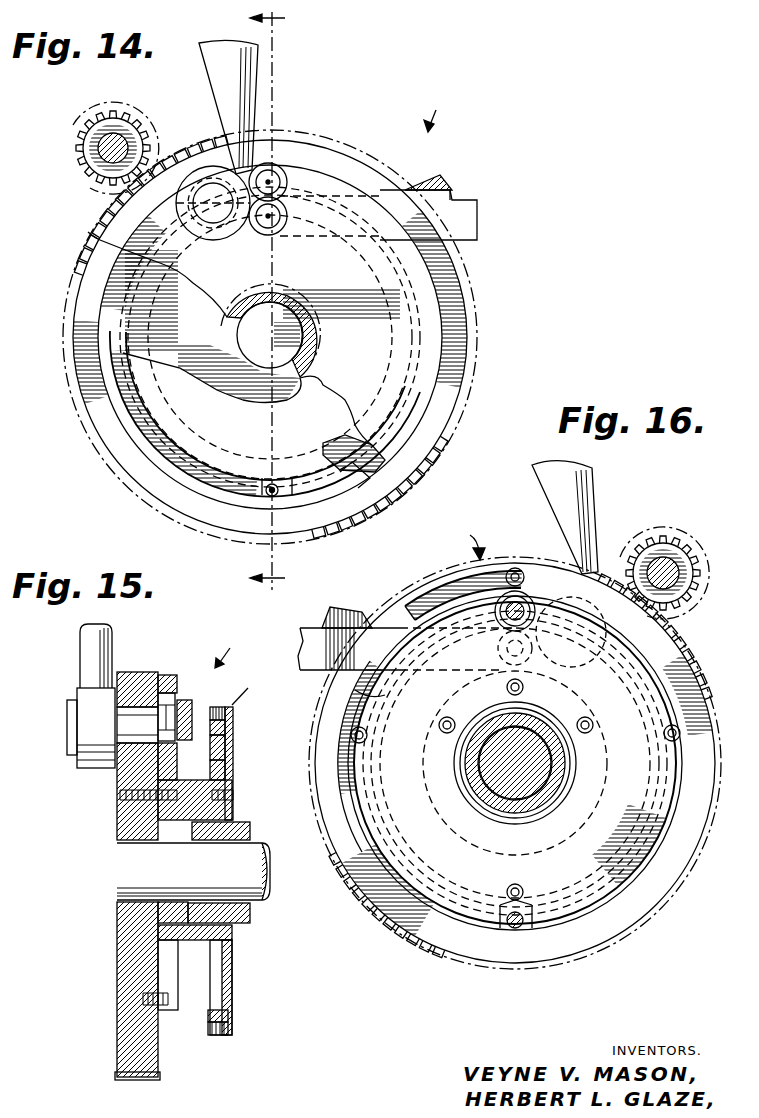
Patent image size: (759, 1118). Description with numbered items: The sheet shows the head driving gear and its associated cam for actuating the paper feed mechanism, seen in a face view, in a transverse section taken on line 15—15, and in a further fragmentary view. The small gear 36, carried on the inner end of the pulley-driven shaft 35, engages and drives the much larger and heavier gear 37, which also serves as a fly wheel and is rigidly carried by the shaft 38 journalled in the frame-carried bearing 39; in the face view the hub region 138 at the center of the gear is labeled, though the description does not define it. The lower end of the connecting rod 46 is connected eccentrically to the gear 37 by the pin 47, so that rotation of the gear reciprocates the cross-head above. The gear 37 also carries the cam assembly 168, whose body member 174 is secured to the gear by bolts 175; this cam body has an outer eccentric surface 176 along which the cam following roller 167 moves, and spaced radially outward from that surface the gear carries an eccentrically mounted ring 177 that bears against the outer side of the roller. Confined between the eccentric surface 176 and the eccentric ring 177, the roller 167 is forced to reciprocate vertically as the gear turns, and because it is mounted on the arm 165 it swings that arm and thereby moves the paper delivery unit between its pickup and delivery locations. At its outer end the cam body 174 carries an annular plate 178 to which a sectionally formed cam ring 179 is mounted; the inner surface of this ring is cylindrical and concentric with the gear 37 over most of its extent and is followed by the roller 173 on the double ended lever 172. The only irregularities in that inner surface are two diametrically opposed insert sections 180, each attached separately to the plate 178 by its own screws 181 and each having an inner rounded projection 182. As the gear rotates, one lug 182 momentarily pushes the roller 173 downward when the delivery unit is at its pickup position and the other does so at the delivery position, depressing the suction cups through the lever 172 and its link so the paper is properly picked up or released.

In FIG. 14, the section line 15— 15 is at (279, 303).
In FIG. 14, the shaft 35 is at (100, 150).
In FIG. 16, the shaft 35 is at (690, 568).
In FIG. 14, the small gear 36 is at (85, 120).
In FIG. 16, the small gear 36 is at (690, 530).
In FIG. 14, the gear 37 is at (103, 218).
In FIG. 15, the gear 37 is at (120, 972).
In FIG. 16, the gear 37 is at (680, 640).
In FIG. 15, the shaft 38 is at (262, 885).
In FIG. 16, the shaft 38 is at (478, 808).
In FIG. 15, the bearing 39 is at (236, 822).
In FIG. 16, the bearing 39 is at (528, 825).
In FIG. 14, the connecting rod 46 is at (252, 80).
In FIG. 15, the connecting rod 46 is at (85, 645).
In FIG. 16, the connecting rod 46 is at (592, 492).
In FIG. 14, the pin 47 is at (240, 168).
In FIG. 15, the pin 47 is at (68, 718).
In FIG. 16, the pin 47 is at (590, 690).
In FIG. 14, the hub 138 is at (298, 336).
In FIG. 14, the arm 165 is at (432, 178).
In FIG. 15, the arm 165 is at (200, 705).
In FIG. 16, the arm 165 is at (368, 610).
In FIG. 14, the cam following roller 167 is at (290, 165).
In FIG. 15, the cam following roller 167 is at (170, 698).
In FIG. 16, the cam following roller 167 is at (513, 566).
In FIG. 14, the cam assembly 168 is at (444, 113).
In FIG. 15, the cam assembly 168 is at (230, 649).
In FIG. 16, the cam assembly 168 is at (465, 542).
In FIG. 14, the double ended lever 172 is at (470, 206).
In FIG. 15, the double ended lever 172 is at (235, 781).
In FIG. 16, the double ended lever 172 is at (318, 672).
In FIG. 14, the roller 173 is at (290, 235).
In FIG. 15, the roller 173 is at (228, 745).
In FIG. 16, the roller 173 is at (490, 668).
In FIG. 14, the cam body member 174 is at (205, 360).
In FIG. 15, the cam body member 174 is at (135, 775).
In FIG. 15, the bolts 175 is at (120, 800).
In FIG. 14, the outer eccentric surface 176 is at (335, 430).
In FIG. 15, the outer eccentric surface 176 is at (168, 678).
In FIG. 16, the outer eccentric surface 176 is at (480, 570).
In FIG. 14, the eccentrically mounted ring 177 is at (345, 478).
In FIG. 15, the eccentrically mounted ring 177 is at (170, 1008).
In FIG. 16, the eccentrically mounted ring 177 is at (362, 690).
In FIG. 14, the annular plate 178 is at (200, 480).
In FIG. 15, the annular plate 178 is at (234, 756).
In FIG. 16, the annular plate 178 is at (618, 868).
In FIG. 14, the cam ring 179 is at (140, 435).
In FIG. 15, the cam ring 179 is at (218, 708).
In FIG. 16, the cam ring 179 is at (345, 868).
In FIG. 14, the insert sections 180 is at (288, 500).
In FIG. 15, the insert sections 180 is at (218, 1038).
In FIG. 16, the insert sections 180 is at (528, 928).
In FIG. 14, the screws 181 is at (274, 484).
In FIG. 15, the screws 181 is at (244, 1032).
In FIG. 16, the screws 181 is at (522, 600).
In FIG. 15, the inner rounded projection 182 is at (226, 726).
In FIG. 16, the inner rounded projection 182 is at (506, 652).